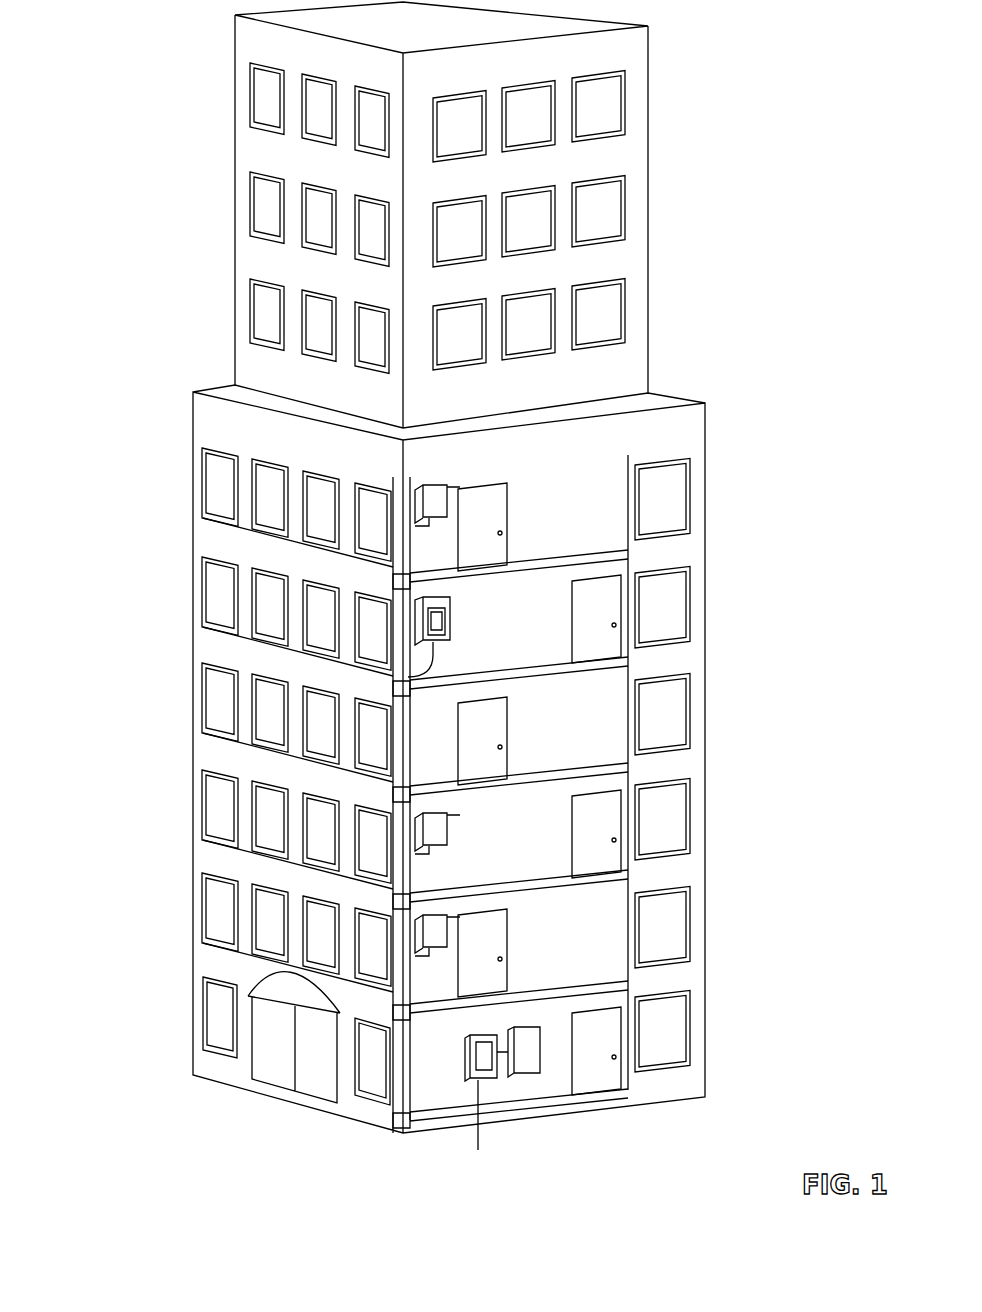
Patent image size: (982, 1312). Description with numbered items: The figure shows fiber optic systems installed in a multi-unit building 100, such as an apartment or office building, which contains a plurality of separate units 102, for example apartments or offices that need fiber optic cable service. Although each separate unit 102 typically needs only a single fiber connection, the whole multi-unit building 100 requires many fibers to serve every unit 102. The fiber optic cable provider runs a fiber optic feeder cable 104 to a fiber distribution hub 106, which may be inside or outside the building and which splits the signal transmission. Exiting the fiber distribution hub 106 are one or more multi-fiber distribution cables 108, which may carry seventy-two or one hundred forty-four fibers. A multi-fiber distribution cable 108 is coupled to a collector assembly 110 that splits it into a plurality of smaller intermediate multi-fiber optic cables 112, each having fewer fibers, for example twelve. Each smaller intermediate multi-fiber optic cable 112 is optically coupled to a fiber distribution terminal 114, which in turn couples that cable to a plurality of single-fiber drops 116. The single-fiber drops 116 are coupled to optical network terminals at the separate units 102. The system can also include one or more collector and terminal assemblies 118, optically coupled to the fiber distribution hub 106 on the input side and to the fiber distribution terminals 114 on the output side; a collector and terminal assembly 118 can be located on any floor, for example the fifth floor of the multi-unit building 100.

The multi-unit building 100 is at (147, 137).
The separate unit 102 is at (483, 548).
The fiber optic feeder cable 104 is at (473, 1138).
The fiber distribution hub 106 is at (367, 1093).
The multi-fiber distribution cable 108 is at (420, 665).
The collector assembly 110 is at (523, 1050).
The smaller intermediate multi-fiber optic cable 112 is at (390, 500).
The fiber distribution terminal 114 is at (423, 485).
The single-fiber drop 116 is at (460, 487).
The collector and terminal assembly 118 is at (415, 620).